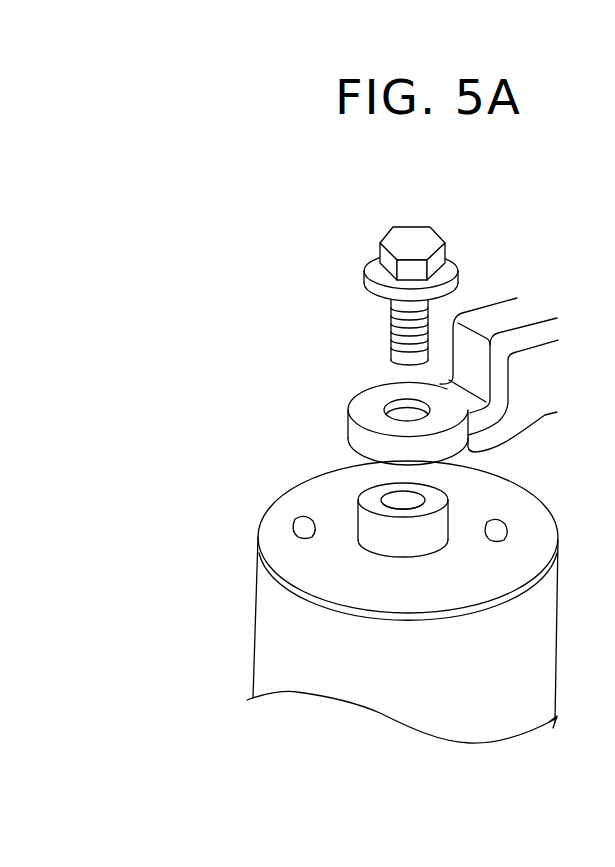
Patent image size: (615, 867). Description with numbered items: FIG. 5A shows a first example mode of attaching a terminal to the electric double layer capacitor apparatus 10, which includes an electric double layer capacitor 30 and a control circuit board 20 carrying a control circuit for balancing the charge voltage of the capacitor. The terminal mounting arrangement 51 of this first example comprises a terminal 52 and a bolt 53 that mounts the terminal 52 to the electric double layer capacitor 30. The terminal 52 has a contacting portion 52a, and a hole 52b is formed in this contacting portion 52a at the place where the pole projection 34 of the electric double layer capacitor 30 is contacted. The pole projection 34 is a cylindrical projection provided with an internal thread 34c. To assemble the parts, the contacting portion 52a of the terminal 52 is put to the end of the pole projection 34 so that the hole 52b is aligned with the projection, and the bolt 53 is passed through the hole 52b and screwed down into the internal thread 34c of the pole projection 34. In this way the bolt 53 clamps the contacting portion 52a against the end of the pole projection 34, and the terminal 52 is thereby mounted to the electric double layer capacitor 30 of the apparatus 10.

The electric double layer capacitor apparatus 10 is at (263, 467).
The control circuit board 20 is at (457, 578).
The electric double layer capacitor 30 is at (253, 623).
The pole projection 34 is at (458, 488).
The internal thread of the pole projection 34c is at (395, 500).
The terminal mounting arrangement 51 is at (337, 172).
The terminal 52 is at (497, 300).
The contacting portion 52a is at (492, 452).
The hole 52b is at (398, 410).
The bolt 53 is at (417, 227).